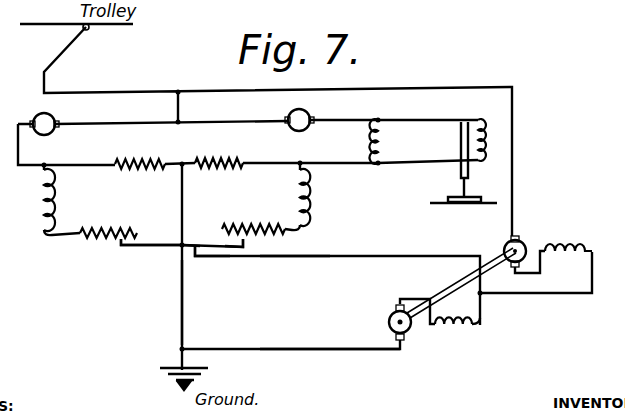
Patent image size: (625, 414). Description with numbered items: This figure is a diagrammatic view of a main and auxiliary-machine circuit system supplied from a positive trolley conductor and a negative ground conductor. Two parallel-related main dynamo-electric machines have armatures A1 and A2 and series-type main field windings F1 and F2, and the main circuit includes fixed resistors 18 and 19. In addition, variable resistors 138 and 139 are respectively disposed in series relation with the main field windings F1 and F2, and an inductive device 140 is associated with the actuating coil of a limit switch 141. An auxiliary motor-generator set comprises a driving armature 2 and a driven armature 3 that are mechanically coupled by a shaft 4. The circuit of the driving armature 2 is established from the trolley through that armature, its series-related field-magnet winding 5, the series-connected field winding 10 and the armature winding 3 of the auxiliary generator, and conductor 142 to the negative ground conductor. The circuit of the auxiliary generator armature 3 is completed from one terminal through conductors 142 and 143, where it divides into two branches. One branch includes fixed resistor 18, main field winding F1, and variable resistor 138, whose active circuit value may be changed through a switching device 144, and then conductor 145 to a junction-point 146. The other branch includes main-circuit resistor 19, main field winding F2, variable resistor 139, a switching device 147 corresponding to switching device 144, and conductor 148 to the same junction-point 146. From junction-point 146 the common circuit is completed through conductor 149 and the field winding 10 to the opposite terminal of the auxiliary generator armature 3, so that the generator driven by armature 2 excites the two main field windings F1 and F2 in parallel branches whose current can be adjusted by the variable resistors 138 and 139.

The armature A1 is at (33, 117).
The armature A2 is at (313, 116).
The main field winding F1 is at (53, 205).
The main field winding F2 is at (313, 205).
The main-circuit fixed resistor 18 is at (160, 165).
The main-circuit fixed resistor 19 is at (239, 165).
The variable resistor 138 is at (98, 238).
The variable resistor 139 is at (264, 231).
The inductive device 140 is at (374, 138).
The limit switch 141 is at (456, 142).
The conductor 142 is at (366, 345).
The conductor 143 is at (183, 305).
The switching device 144 is at (121, 245).
The conductor 145 is at (160, 247).
The junction-point 146 is at (186, 246).
The switching device 147 is at (243, 241).
The conductor 148 is at (221, 249).
The conductor 149 is at (315, 256).
The driving armature 2 is at (507, 245).
The driven armature 3 is at (392, 316).
The shaft 4 is at (459, 289).
The field-magnet winding 5 is at (578, 248).
The field winding 10 is at (481, 326).